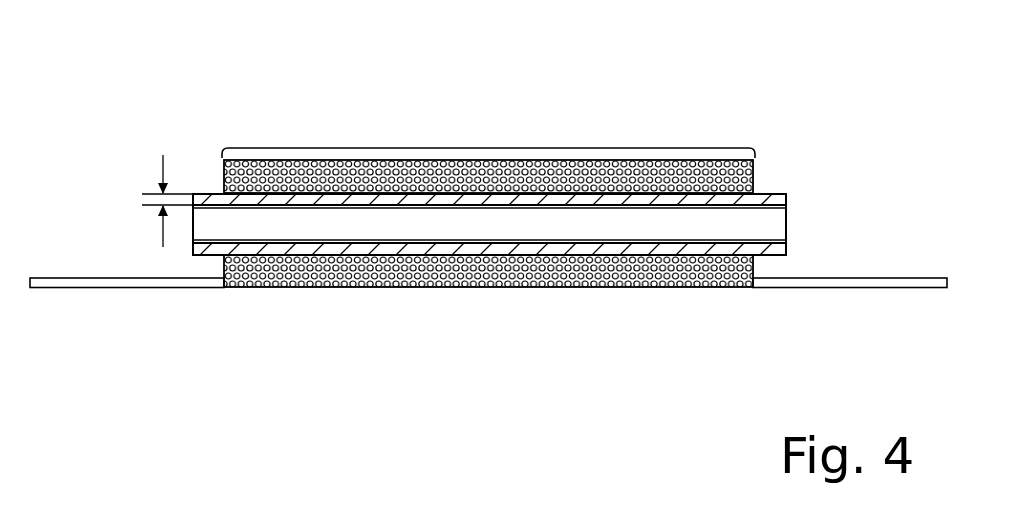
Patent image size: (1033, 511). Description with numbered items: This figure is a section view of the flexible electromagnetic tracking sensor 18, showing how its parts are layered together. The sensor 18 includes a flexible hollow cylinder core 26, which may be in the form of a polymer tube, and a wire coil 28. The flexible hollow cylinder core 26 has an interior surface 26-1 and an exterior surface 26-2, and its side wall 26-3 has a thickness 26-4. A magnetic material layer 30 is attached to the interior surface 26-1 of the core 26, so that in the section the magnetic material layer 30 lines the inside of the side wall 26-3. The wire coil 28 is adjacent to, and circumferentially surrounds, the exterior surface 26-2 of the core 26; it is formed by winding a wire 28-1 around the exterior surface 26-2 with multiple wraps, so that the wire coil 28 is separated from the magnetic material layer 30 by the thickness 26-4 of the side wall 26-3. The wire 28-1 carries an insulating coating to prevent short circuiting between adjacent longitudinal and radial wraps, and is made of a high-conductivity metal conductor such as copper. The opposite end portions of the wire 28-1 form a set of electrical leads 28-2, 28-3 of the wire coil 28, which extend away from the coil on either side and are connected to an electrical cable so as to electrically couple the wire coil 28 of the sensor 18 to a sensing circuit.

The flexible electromagnetic tracking sensor 18 is at (752, 76).
The flexible hollow cylinder core 26 is at (786, 195).
The interior surface 26-1 is at (775, 203).
The exterior surface 26-2 is at (770, 196).
The side wall 26-3 is at (786, 246).
The thickness 26-4 is at (163, 172).
The wire coil 28 is at (493, 148).
The wire 28-1 is at (223, 167).
The electrical lead 28-2 is at (135, 288).
The electrical lead 28-3 is at (860, 288).
The magnetic material layer 30 is at (217, 240).